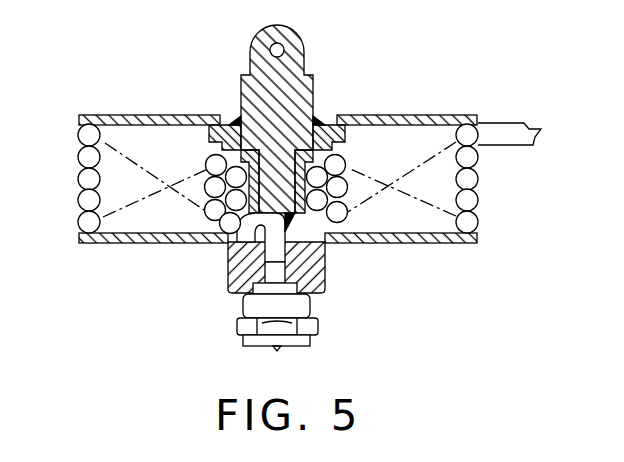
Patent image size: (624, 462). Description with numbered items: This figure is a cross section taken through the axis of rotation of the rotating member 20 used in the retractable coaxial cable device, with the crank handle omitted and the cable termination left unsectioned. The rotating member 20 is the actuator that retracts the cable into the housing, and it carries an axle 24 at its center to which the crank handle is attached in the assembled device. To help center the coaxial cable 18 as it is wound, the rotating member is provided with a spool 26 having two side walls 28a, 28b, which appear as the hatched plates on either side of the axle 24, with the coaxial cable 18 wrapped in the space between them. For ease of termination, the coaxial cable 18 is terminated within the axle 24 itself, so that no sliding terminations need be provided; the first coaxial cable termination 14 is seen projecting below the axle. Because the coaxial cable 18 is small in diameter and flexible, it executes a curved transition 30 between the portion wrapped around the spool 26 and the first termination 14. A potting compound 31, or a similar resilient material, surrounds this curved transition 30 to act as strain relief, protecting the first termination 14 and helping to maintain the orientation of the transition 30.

The first coaxial cable termination 14 is at (311, 338).
The coaxial cable 18 is at (502, 128).
The rotating member 20 is at (375, 53).
The axle 24 is at (241, 88).
The spool 26 is at (123, 244).
The side wall 28a is at (398, 114).
The side wall 28b is at (382, 243).
The curved transition 30 is at (229, 255).
The potting compound 31 is at (232, 290).